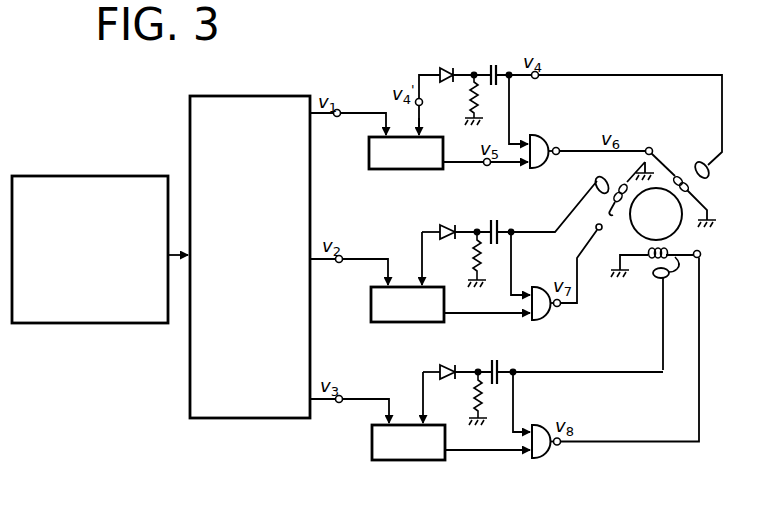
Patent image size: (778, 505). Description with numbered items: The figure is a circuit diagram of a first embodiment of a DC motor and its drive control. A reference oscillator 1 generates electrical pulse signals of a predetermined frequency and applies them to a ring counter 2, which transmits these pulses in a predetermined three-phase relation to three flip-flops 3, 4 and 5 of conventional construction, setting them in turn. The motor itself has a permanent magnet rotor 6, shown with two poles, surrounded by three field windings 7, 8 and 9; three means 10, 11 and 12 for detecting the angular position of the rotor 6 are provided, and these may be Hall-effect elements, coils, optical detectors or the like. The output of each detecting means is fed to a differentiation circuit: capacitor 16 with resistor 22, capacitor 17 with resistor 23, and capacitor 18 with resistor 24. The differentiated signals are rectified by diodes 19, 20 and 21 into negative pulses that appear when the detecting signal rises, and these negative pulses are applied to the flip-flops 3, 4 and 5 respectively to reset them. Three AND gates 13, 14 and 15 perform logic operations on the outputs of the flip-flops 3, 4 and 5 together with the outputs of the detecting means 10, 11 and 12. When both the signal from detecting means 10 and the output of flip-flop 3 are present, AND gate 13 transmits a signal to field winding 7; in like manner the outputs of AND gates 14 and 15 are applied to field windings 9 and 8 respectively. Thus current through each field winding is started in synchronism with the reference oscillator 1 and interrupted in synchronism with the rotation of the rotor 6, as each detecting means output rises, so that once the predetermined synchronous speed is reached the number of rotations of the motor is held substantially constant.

The reference oscillator 1 is at (98, 176).
The ring counter 2 is at (245, 96).
The flip-flop 3 is at (369, 152).
The flip-flop 4 is at (371, 305).
The flip-flop 5 is at (372, 444).
The rotor 6 is at (682, 226).
The field winding 7 is at (699, 188).
The field winding 8 is at (671, 313).
The field winding 9 is at (631, 203).
The detecting means 10 is at (700, 163).
The detecting means 11 is at (652, 275).
The detecting means 12 is at (596, 181).
The AND gate 13 is at (542, 136).
The AND gate 14 is at (539, 287).
The AND gate 15 is at (535, 423).
The capacitor 16 is at (492, 65).
The capacitor 17 is at (493, 220).
The capacitor 18 is at (494, 360).
The diode 19 is at (445, 67).
The diode 20 is at (440, 225).
The diode 21 is at (442, 365).
The resistor 22 is at (470, 105).
The resistor 23 is at (471, 253).
The resistor 24 is at (471, 397).